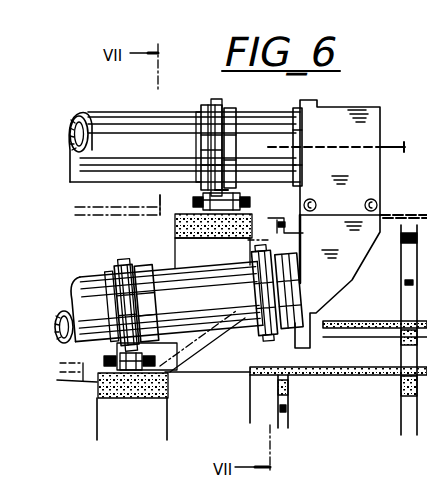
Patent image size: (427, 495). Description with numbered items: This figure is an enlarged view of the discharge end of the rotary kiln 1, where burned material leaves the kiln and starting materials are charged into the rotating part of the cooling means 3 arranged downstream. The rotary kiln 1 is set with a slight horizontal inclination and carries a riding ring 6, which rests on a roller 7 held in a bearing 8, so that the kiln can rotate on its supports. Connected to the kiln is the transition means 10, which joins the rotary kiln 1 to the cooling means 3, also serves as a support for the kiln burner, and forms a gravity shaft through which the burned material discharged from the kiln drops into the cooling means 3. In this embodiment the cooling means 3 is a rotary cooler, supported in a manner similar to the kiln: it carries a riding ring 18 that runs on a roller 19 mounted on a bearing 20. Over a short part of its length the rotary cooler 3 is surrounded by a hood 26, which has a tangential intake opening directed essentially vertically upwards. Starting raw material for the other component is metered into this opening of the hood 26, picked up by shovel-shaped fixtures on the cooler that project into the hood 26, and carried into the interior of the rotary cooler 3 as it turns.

The rotary kiln 1 is at (129, 115).
The cooling means 3 is at (89, 278).
The riding ring 6 is at (212, 100).
The roller 7 is at (242, 213).
The bearing 8 is at (218, 242).
The transition means 10 is at (381, 135).
The riding ring 18 is at (125, 263).
The roller 19 is at (98, 382).
The bearing 20 is at (137, 398).
The hood 26 is at (262, 355).